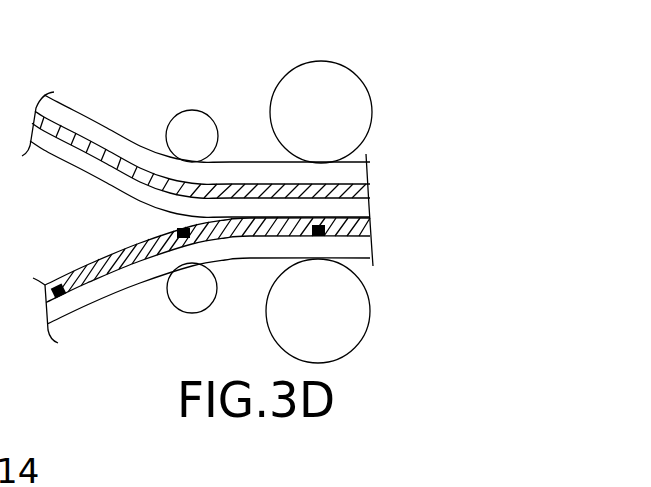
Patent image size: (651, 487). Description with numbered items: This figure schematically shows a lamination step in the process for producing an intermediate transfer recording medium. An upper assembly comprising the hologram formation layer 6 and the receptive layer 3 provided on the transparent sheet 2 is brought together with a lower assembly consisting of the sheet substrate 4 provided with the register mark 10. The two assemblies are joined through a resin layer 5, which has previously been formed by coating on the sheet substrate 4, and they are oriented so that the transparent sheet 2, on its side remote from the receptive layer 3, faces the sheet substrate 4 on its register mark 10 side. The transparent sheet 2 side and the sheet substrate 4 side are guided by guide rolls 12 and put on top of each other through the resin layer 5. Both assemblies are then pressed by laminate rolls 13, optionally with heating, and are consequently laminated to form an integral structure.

The transparent sheet 2 is at (55, 158).
The receptive layer 3 is at (65, 122).
The sheet substrate 4 is at (92, 296).
The resin layer 5 is at (98, 257).
The hologram formation layer 6 is at (108, 163).
The register mark 10 is at (56, 288).
The guide rolls 12 is at (192, 124).
The laminate rolls 13 is at (323, 73).